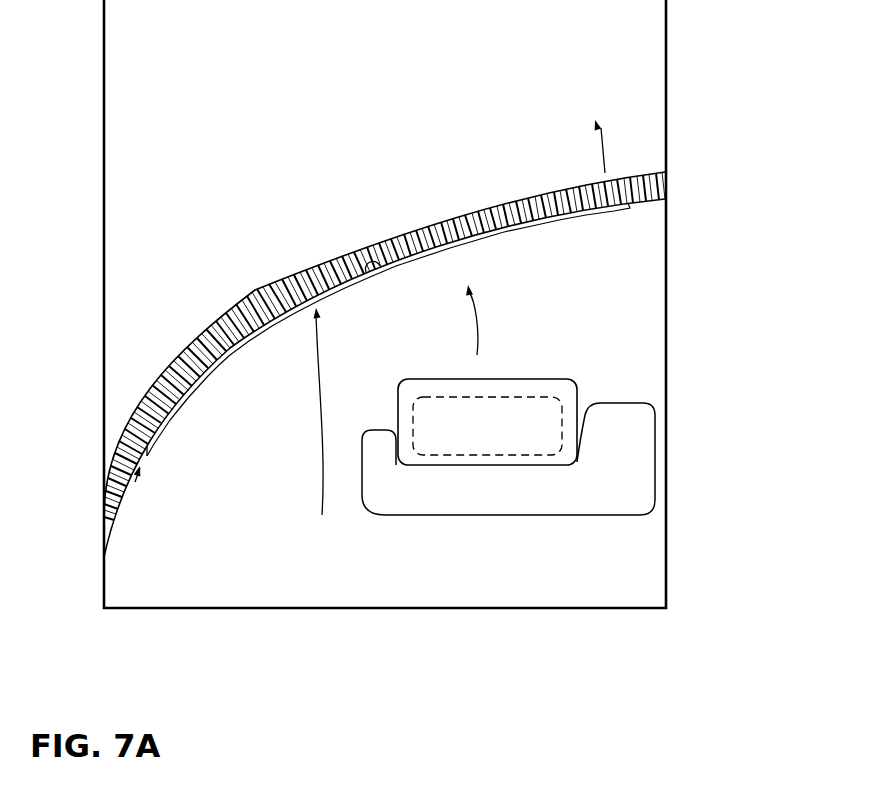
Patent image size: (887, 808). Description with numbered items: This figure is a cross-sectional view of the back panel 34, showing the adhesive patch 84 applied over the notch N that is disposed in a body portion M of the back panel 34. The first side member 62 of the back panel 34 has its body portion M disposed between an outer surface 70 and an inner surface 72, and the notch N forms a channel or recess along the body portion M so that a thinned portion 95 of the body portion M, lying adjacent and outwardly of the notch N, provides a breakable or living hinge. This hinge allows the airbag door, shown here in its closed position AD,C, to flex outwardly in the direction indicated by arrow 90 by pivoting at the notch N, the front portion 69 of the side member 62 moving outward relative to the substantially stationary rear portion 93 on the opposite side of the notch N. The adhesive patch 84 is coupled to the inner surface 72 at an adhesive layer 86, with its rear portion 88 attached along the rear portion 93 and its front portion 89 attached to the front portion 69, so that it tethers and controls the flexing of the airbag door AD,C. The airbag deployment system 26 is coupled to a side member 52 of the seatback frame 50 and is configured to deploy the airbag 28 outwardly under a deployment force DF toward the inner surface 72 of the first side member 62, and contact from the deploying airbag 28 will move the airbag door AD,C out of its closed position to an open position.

The airbag deployment system 26 is at (582, 392).
The airbag 28 is at (532, 433).
The back panel 34 is at (332, 172).
The seatback frame 50 is at (590, 547).
The side member 52 is at (597, 493).
The first side member 62 is at (463, 200).
The front portion 69 is at (632, 208).
The outer surface 70 is at (543, 193).
The inner surface 72 is at (560, 218).
The adhesive patch 84 is at (320, 423).
The adhesive layer 86 is at (273, 297).
The rear portion 88 is at (271, 338).
The front portion 89 is at (462, 247).
The arrow 90 is at (604, 152).
The rear portion 93 is at (150, 403).
The thinned portion 95 is at (366, 245).
The notch N is at (392, 259).
The air duct / channel AD,C is at (510, 203).
The body portion M is at (620, 180).
The deployment force DF is at (477, 340).